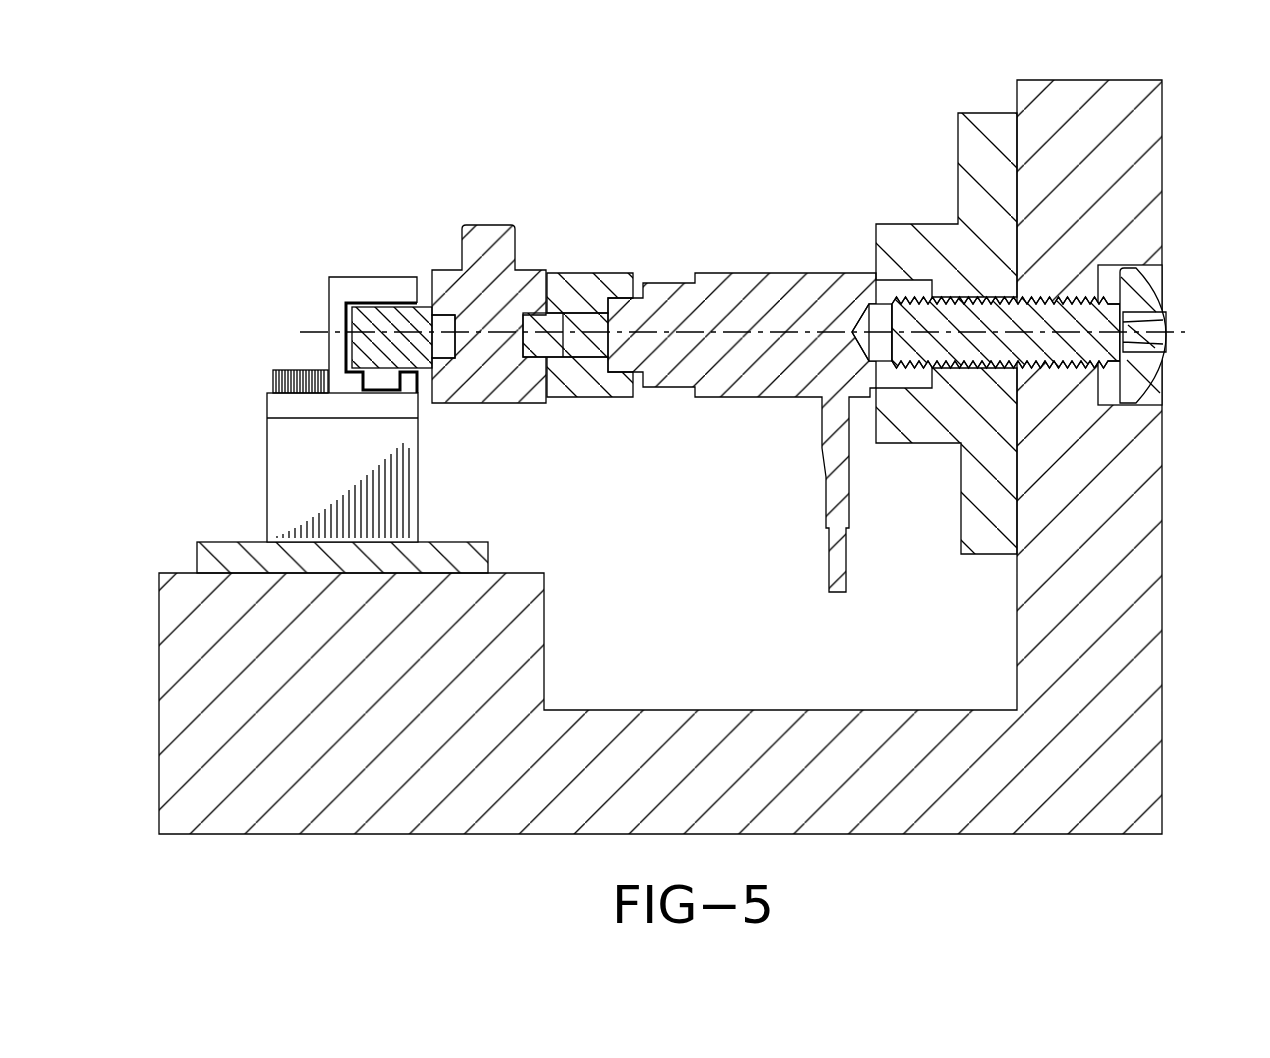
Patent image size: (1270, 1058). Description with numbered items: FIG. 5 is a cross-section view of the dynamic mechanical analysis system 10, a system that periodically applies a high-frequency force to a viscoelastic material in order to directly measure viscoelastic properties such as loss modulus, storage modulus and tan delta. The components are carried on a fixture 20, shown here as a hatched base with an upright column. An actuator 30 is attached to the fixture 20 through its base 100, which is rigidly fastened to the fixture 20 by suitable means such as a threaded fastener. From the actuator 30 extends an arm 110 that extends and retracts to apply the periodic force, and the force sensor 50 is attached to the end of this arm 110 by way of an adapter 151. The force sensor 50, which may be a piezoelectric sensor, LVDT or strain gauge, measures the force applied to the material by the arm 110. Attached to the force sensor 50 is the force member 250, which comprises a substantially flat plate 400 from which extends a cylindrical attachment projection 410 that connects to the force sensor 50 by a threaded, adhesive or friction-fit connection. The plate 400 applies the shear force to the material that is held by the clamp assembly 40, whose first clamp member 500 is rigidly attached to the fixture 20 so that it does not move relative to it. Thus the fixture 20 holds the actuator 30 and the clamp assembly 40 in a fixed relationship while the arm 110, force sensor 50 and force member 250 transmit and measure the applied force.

The dynamic mechanical analysis (DMA) system 10 is at (706, 126).
The fixture 20 is at (516, 652).
The actuator 30 is at (795, 260).
The clamp assembly 40 is at (325, 268).
The force sensor 50 is at (492, 242).
The base 100 is at (975, 155).
The arm 110 is at (578, 342).
The adapter 151 is at (587, 303).
The force member 250 is at (392, 298).
The flat plate 400 is at (358, 327).
The cylindrical attachment projection 410 is at (448, 343).
The first clamp member 500 is at (312, 405).